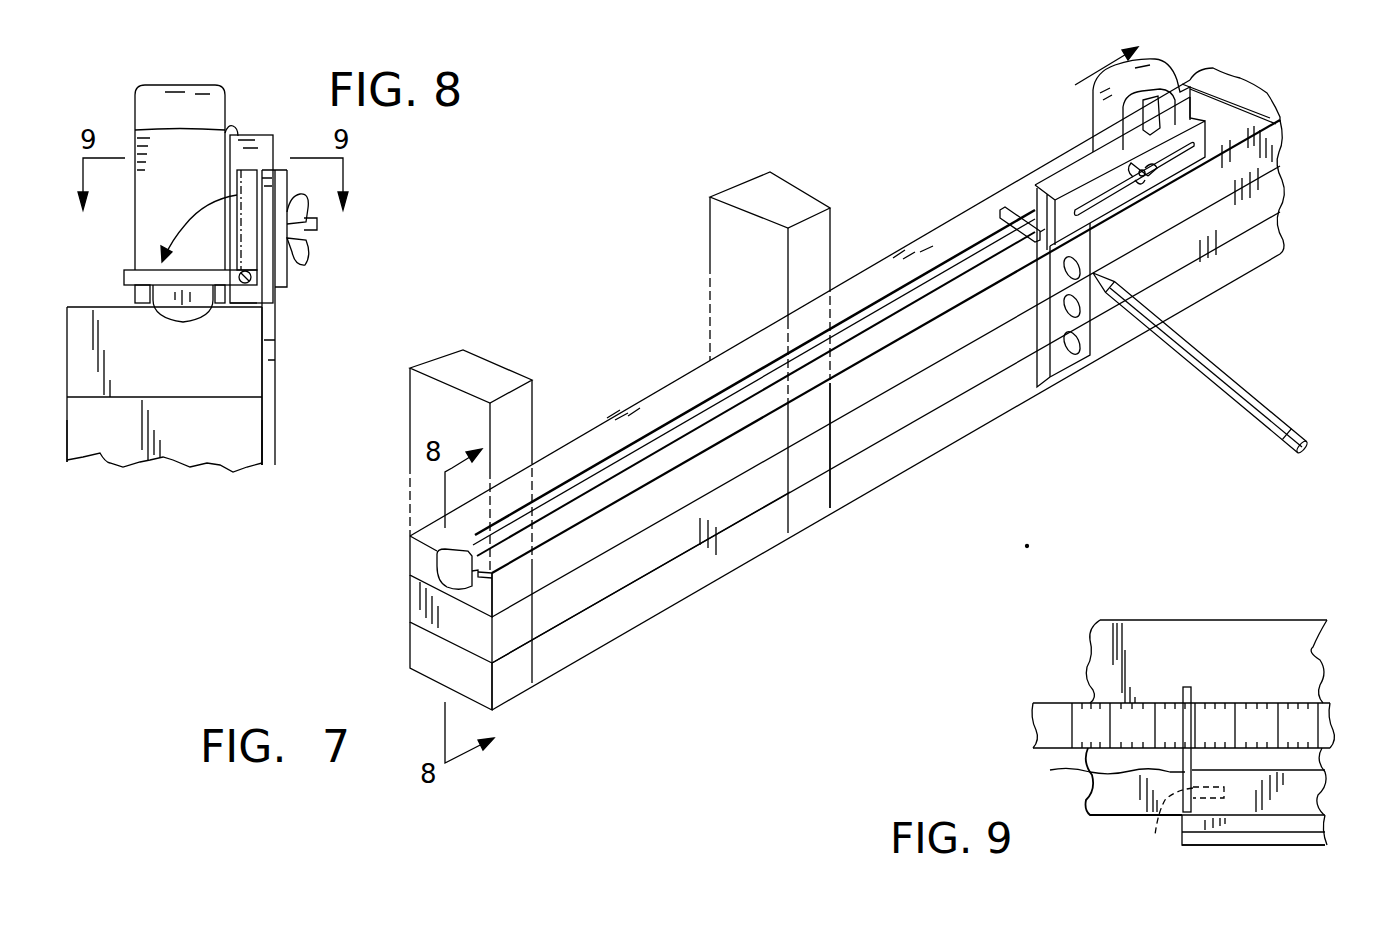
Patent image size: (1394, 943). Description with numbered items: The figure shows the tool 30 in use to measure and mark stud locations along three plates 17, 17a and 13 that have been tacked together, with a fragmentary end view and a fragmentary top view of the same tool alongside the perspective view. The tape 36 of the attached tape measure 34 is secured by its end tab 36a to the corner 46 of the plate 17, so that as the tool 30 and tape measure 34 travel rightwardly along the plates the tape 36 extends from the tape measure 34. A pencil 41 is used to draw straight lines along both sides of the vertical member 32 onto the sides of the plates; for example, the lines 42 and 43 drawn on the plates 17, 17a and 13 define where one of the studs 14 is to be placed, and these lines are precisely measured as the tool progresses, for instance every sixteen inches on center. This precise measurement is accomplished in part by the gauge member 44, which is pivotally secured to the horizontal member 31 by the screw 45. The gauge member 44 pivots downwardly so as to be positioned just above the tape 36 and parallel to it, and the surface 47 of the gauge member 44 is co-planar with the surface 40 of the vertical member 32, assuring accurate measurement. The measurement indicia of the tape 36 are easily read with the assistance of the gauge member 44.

In FIG. 7, the plate 13 is at (423, 654).
In FIG. 7, the studs 14 is at (412, 410).
In FIG. 8, the plate 17 is at (250, 357).
In FIG. 7, the plate 17 is at (415, 543).
In FIG. 8, the plate 17a is at (222, 457).
In FIG. 7, the plate 17a is at (415, 600).
In FIG. 7, the tool 30 is at (1242, 101).
In FIG. 9, the horizontal member 31 is at (1310, 782).
In FIG. 7, the vertical member 32 is at (1080, 323).
In FIG. 9, the vertical member 32 is at (1310, 825).
In FIG. 8, the stop block 34 is at (212, 105).
In FIG. 7, the stop block 34 is at (1093, 98).
In FIG. 8, the tape 36 is at (163, 311).
In FIG. 7, the tape 36 is at (685, 423).
In FIG. 9, the tape 36 is at (1260, 703).
In FIG. 7, the end tab 36a is at (440, 567).
In FIG. 9, the surface 40 is at (1182, 823).
In FIG. 7, the pencil 41 is at (1245, 390).
In FIG. 7, the line 42 is at (787, 513).
In FIG. 7, the line 43 is at (835, 483).
In FIG. 8, the gauge member 44 is at (125, 270).
In FIG. 7, the gauge member 44 is at (1000, 210).
In FIG. 9, the gauge member 44 is at (1183, 692).
In FIG. 8, the screw 45 is at (258, 293).
In FIG. 9, the screw 45 is at (1171, 821).
In FIG. 7, the corner 46 is at (500, 572).
In FIG. 9, the surface 47 is at (1098, 768).